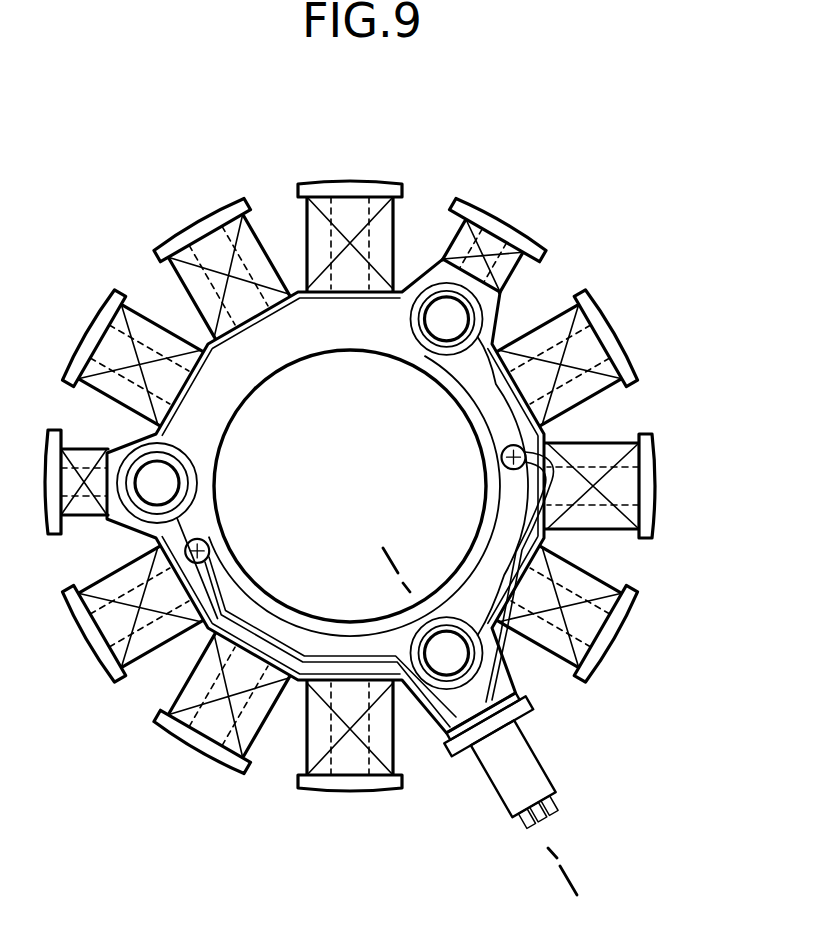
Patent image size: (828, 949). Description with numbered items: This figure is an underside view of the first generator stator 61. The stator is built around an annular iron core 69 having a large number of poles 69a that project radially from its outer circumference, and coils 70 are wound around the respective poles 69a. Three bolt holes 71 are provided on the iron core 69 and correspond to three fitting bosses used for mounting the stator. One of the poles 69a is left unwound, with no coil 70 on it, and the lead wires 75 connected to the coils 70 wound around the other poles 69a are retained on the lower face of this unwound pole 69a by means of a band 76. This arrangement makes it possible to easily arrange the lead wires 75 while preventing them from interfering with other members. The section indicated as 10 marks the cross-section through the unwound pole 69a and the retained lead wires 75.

The first generator stator 61 is at (178, 222).
The annular iron core 69 is at (282, 361).
The poles 69a is at (352, 184).
The coils 70 is at (547, 313).
The bolt holes 71 is at (441, 327).
The lead wires 75 is at (522, 793).
The band 76 is at (452, 730).
The section line 10 is at (430, 535).